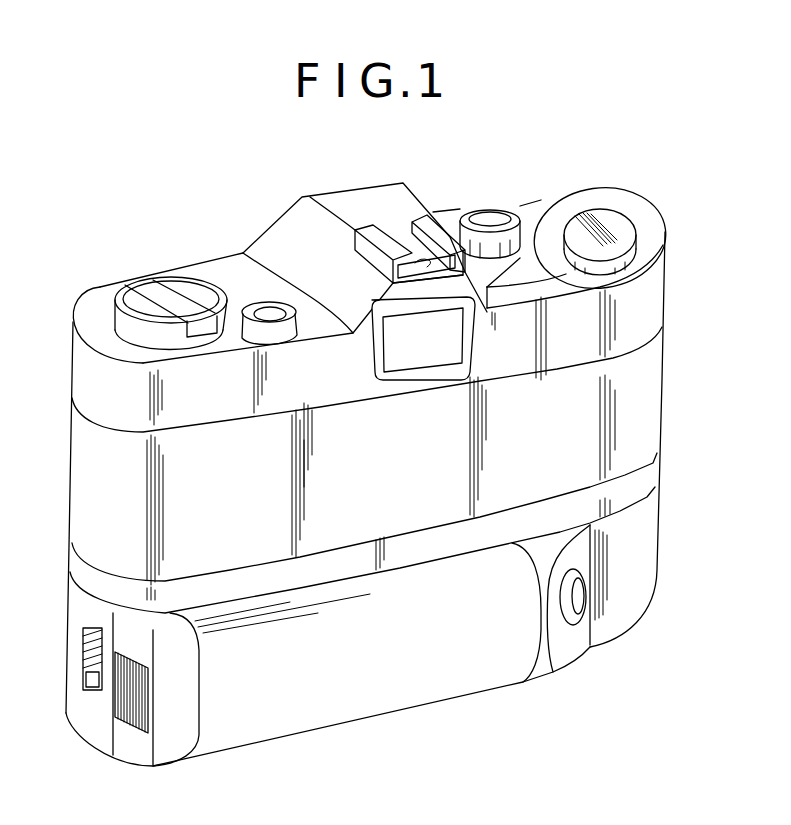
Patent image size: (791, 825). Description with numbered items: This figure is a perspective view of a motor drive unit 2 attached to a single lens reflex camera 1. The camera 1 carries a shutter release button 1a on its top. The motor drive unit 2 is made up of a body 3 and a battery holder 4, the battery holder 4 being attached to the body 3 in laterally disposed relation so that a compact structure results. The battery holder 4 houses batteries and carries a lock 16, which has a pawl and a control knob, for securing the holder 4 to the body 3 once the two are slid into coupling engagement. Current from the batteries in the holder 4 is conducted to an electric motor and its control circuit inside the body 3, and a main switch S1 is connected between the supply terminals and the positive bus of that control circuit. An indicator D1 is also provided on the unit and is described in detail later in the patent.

The single lens reflex camera 1 is at (662, 381).
The shutter release button 1a is at (487, 220).
The motor drive unit 2 is at (688, 560).
The body 3 is at (628, 618).
The battery holder 4 is at (442, 693).
The indicator D1 is at (578, 610).
The main switch S1 is at (83, 658).
The lock 16 is at (123, 723).